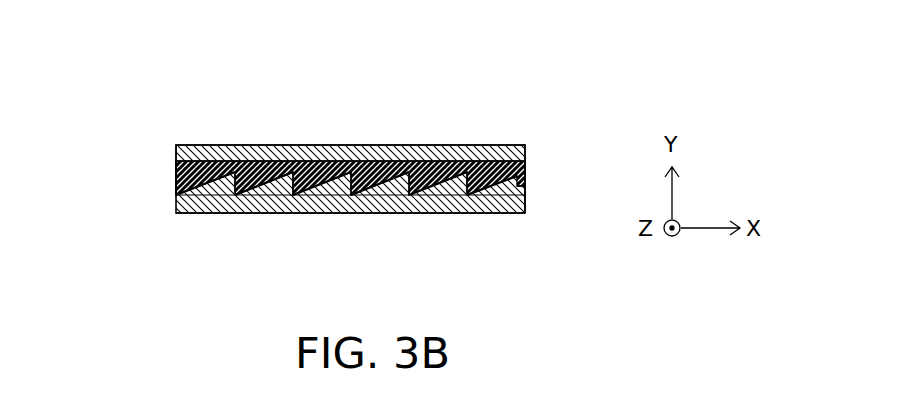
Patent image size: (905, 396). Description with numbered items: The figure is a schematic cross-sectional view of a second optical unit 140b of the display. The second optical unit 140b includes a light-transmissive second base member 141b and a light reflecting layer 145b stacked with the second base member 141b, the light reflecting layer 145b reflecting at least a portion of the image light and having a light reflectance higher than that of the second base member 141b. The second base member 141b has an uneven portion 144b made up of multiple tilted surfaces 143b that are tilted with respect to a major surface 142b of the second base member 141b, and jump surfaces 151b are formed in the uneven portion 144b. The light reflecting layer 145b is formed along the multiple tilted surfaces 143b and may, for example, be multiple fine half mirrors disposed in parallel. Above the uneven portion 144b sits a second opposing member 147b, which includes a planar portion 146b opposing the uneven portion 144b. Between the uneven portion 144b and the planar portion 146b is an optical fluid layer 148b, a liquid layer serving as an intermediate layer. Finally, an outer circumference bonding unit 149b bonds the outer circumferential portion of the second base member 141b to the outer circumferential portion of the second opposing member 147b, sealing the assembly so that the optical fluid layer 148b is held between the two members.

The second optical unit 140b is at (203, 90).
The second base member 141b is at (455, 200).
The major surface 142b is at (427, 208).
The tilted surfaces 143b is at (316, 192).
The uneven portion 144b is at (335, 190).
The light reflecting layer 145b is at (250, 196).
The planar portion 146b is at (370, 161).
The second opposing member 147b is at (430, 161).
The optical fluid layer 148b is at (482, 178).
The outer circumference bonding unit 149b is at (176, 178).
The jump surfaces 151b is at (522, 197).